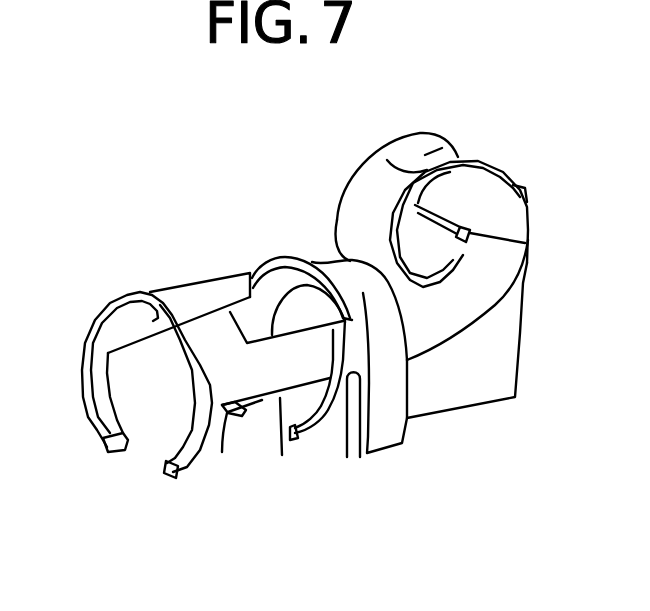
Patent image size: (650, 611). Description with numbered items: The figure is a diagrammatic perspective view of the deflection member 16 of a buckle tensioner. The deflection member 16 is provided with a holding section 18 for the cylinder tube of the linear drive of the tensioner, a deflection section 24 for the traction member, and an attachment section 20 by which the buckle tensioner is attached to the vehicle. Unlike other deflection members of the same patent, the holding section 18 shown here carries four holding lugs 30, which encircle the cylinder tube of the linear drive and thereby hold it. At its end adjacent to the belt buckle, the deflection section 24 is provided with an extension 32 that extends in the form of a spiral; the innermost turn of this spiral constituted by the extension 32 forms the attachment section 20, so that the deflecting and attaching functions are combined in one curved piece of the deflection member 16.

The deflection member 16 is at (208, 205).
The holding section 18 is at (270, 370).
The attachment section 20 is at (428, 253).
The deflection section 24 is at (436, 156).
The holding lugs 30 is at (103, 432).
The extension 32 is at (362, 197).